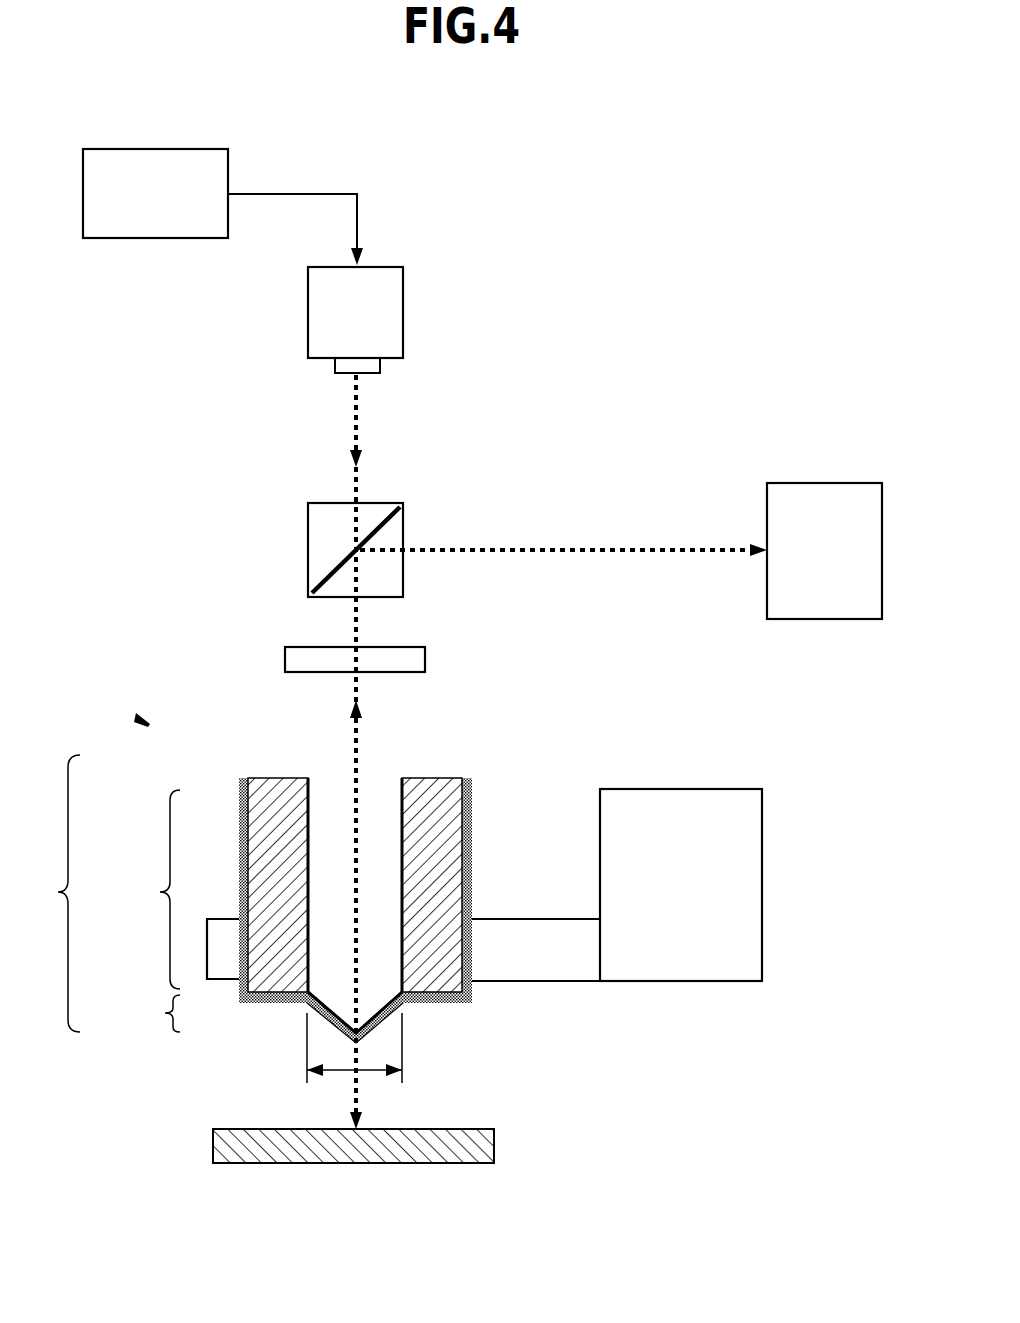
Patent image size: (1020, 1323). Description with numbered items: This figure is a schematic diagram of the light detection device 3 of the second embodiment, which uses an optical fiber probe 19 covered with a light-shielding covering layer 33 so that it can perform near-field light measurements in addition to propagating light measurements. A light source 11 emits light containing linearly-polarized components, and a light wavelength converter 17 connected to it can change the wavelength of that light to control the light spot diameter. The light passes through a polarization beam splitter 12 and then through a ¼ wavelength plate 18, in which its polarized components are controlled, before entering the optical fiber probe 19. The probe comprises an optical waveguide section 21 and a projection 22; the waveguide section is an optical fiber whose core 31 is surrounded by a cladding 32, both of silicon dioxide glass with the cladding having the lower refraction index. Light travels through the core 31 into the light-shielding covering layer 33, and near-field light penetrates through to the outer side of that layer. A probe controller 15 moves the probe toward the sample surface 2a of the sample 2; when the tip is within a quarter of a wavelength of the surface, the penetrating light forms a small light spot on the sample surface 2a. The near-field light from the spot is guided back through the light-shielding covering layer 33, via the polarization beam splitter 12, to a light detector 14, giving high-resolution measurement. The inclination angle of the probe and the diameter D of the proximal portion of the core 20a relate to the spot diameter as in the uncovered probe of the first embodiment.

The sample 2 is at (390, 1165).
The sample surface 2a is at (448, 1128).
The light detection device 3 is at (273, 869).
The light source 11 is at (403, 310).
The polarization beam splitter 12 is at (332, 562).
The light detector 14 is at (825, 483).
The probe controller 15 is at (693, 788).
The light wavelength converter 17 is at (133, 149).
The ¼ wavelength plate 18 is at (300, 647).
The optical fiber probe 19 is at (273, 896).
The proximal portion of the core 20a is at (395, 1000).
The optical waveguide section 21 is at (151, 889).
The projection 22 is at (325, 1039).
The core 31 is at (330, 787).
The cladding 32 is at (262, 780).
The light-shielding covering layer 33 is at (383, 1020).
The diameter of the proximal portion of the core D is at (338, 1078).